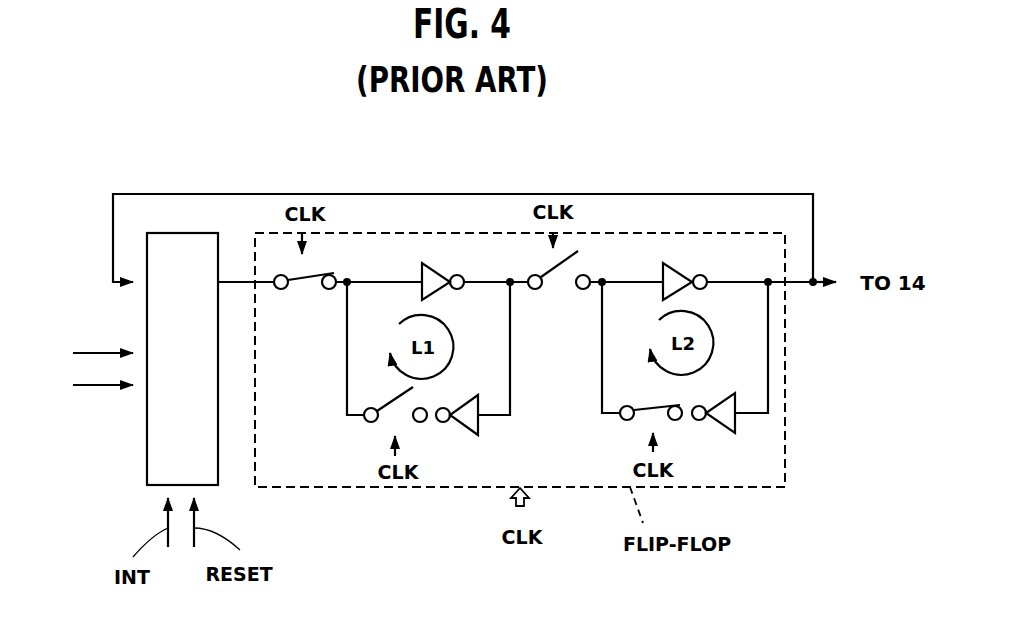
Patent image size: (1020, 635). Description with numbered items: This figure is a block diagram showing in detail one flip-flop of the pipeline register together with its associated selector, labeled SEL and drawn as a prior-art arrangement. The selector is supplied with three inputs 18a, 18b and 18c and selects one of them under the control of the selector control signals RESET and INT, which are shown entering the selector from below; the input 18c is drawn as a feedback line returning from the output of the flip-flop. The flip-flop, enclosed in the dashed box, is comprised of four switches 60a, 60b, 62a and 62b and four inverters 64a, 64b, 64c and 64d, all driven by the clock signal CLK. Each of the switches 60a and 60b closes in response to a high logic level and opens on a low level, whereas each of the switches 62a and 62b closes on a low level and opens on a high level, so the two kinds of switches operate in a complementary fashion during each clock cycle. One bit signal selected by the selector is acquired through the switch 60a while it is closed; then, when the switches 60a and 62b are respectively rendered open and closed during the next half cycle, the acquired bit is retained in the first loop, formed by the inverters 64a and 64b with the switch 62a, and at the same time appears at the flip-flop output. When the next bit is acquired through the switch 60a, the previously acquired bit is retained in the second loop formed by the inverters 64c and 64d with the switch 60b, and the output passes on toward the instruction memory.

The input 18c is at (155, 194).
The input 18a is at (78, 354).
The input 18b is at (78, 387).
The switch 60a is at (304, 266).
The switch 60b is at (655, 407).
The switch 62a is at (393, 407).
The switch 62b is at (553, 266).
The inverter 64a is at (438, 271).
The inverter 64b is at (481, 428).
The inverter 64c is at (674, 271).
The inverter 64d is at (737, 432).